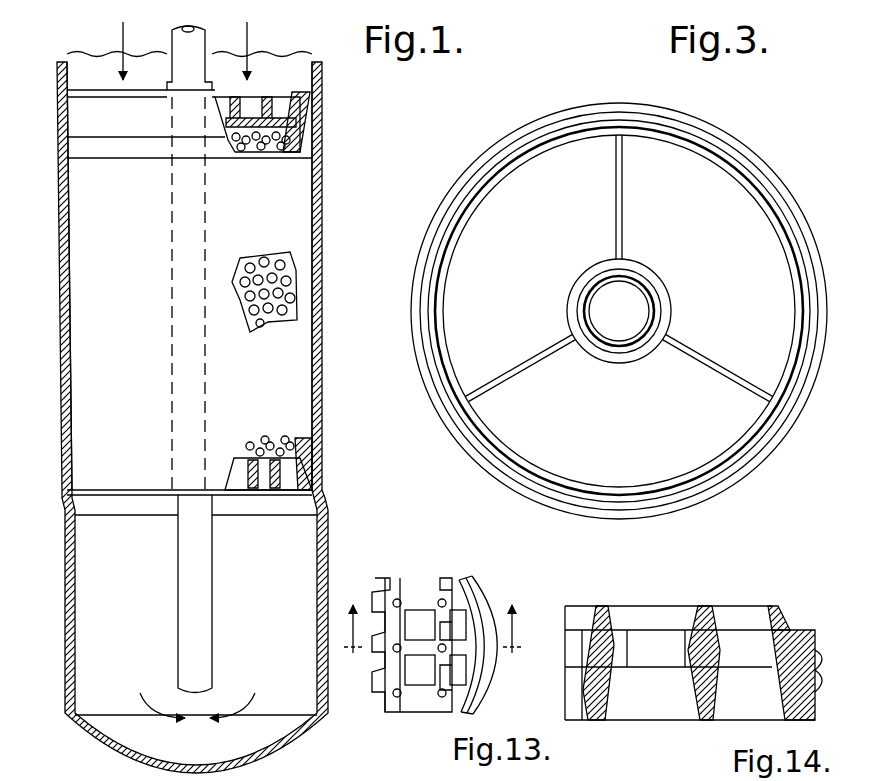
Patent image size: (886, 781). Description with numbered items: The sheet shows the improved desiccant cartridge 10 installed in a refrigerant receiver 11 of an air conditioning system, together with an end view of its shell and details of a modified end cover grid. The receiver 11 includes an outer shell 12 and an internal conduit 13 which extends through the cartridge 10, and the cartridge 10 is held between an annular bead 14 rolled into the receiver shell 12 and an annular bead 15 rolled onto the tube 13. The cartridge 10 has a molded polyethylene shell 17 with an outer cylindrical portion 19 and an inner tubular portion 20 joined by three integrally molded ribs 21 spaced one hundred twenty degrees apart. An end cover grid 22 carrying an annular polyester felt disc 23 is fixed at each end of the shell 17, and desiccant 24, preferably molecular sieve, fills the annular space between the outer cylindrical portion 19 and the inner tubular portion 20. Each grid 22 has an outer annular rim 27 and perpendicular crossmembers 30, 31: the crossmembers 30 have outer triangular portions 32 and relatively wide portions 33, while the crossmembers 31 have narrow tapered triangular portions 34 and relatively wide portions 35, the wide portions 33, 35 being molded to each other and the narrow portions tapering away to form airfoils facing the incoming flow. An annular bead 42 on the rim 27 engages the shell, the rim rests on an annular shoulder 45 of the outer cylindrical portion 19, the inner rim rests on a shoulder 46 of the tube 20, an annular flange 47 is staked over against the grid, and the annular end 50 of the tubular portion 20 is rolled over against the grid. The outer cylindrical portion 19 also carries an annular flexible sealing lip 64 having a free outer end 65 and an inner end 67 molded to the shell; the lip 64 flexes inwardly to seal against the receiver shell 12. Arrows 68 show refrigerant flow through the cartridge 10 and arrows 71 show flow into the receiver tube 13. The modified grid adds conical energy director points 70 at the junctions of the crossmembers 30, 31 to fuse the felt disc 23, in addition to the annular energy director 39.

In FIG. 1, the desiccant cartridge 10 is at (306, 192).
In FIG. 1, the refrigerant receiver 11 is at (62, 406).
In FIG. 1, the outer shell 12 is at (322, 328).
In FIG. 1, the internal conduit 13 is at (176, 578).
In FIG. 1, the annular bead 14 is at (322, 494).
In FIG. 13, the annular bead 14 is at (435, 645).
In FIG. 1, the annular bead 15 is at (168, 48).
In FIG. 1, the molded polyethylene shell 17 is at (120, 315).
In FIG. 3, the molded polyethylene shell 17 is at (746, 138).
In FIG. 1, the outer cylindrical portion 19 is at (85, 355).
In FIG. 3, the outer cylindrical portion 19 is at (517, 131).
In FIG. 3, the inner tubular portion 20 is at (668, 284).
In FIG. 3, the ribs 21 is at (616, 188).
In FIG. 1, the end cover grid 22 is at (262, 289).
In FIG. 1, the annular polyester felt disc 23 is at (212, 122).
In FIG. 1, the desiccant 24 is at (240, 149).
In FIG. 13, the outer annular rim 27 is at (464, 577).
In FIG. 14, the outer annular rim 27 is at (817, 630).
In FIG. 13, the crossmembers 30 is at (392, 656).
In FIG. 14, the crossmembers 30 is at (622, 630).
In FIG. 13, the crossmembers 31 is at (410, 702).
In FIG. 14, the crossmembers 31 is at (658, 648).
In FIG. 14, the outer triangular portions 32 is at (620, 718).
In FIG. 13, the relatively wide portions 33 is at (428, 594).
In FIG. 14, the relatively wide portions 33 is at (665, 625).
In FIG. 14, the tapered triangular portions 34 is at (693, 700).
In FIG. 13, the relatively wide portions 35 is at (378, 598).
In FIG. 14, the relatively wide portions 35 is at (683, 664).
In FIG. 14, the annular energy director 39 is at (784, 616).
In FIG. 13, the annular bead 42 is at (480, 580).
In FIG. 14, the annular bead 42 is at (829, 695).
In FIG. 3, the annular shoulder 45 is at (790, 283).
In FIG. 3, the shoulder 46 is at (568, 306).
In FIG. 3, the annular flange 47 is at (758, 444).
In FIG. 3, the annular end 50 is at (638, 346).
In FIG. 1, the annular flexible sealing lip 64 is at (74, 150).
In FIG. 3, the annular flexible sealing lip 64 is at (716, 489).
In FIG. 1, the free outer end 65 is at (111, 137).
In FIG. 1, the inner end 67 is at (88, 160).
In FIG. 1, the arrows 68 is at (120, 36).
In FIG. 13, the conical energy director points 70 is at (397, 603).
In FIG. 14, the conical energy director points 70 is at (584, 608).
In FIG. 1, the arrows 71 is at (136, 701).